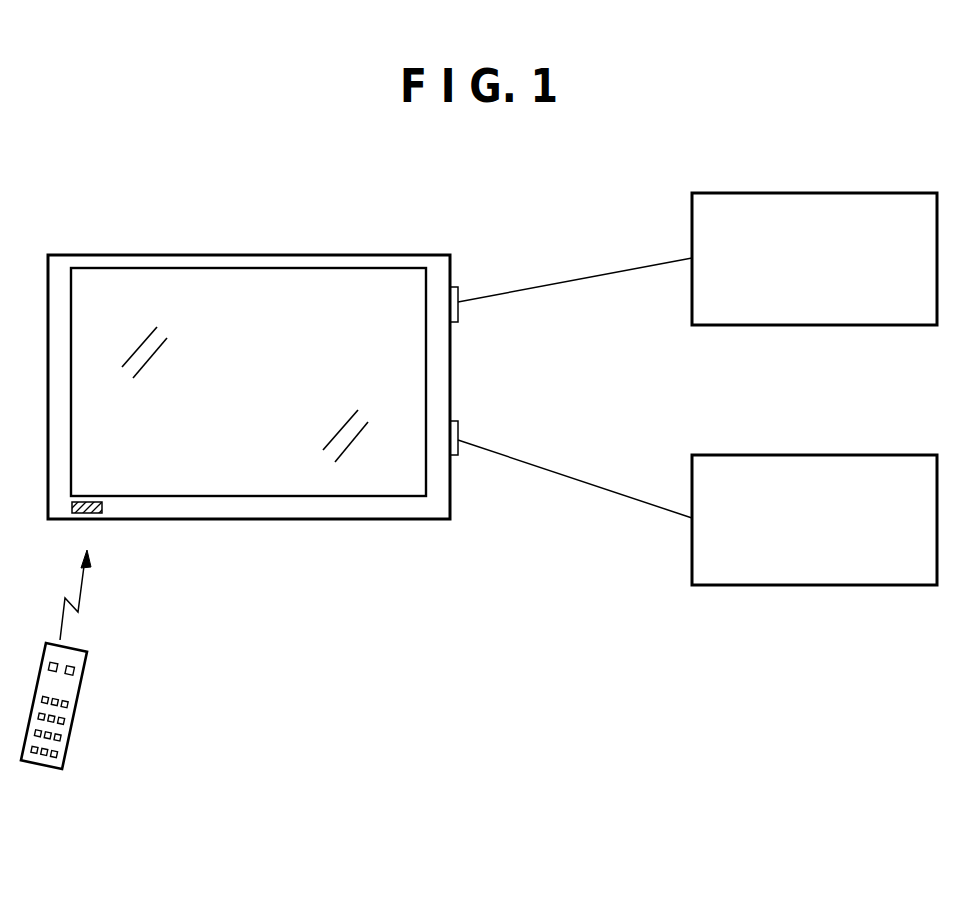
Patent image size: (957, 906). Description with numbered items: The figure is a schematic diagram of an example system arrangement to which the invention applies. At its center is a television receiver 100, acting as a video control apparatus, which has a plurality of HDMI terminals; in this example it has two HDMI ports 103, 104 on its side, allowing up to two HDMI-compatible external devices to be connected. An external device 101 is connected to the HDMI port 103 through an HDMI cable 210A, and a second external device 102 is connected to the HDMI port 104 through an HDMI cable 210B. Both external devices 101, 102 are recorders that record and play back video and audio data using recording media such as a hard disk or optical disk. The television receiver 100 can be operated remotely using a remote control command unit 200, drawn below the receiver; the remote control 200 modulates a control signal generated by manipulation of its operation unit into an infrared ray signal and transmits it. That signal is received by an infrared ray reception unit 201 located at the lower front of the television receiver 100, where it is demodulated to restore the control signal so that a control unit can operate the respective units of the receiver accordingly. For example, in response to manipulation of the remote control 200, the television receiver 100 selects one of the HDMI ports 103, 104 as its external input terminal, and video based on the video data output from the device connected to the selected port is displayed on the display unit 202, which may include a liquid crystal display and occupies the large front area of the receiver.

The television receiver 100 is at (246, 255).
The external device 101 is at (817, 193).
The external device 102 is at (817, 455).
The HDMI port 103 is at (458, 287).
The HDMI port 104 is at (458, 421).
The remote control command unit 200 is at (78, 712).
The infrared ray reception unit 201 is at (104, 506).
The display unit 202 is at (127, 268).
The HDMI cable 210A is at (594, 275).
The HDMI cable 210B is at (594, 482).